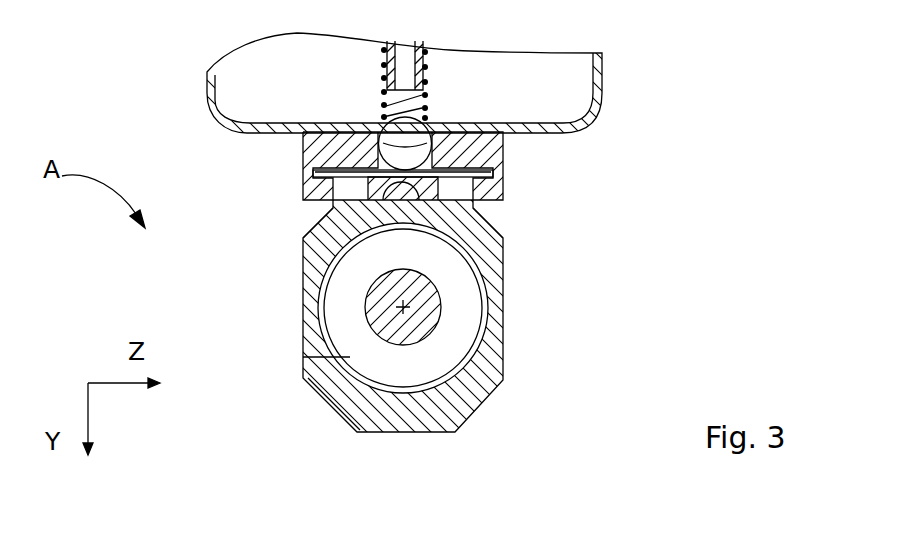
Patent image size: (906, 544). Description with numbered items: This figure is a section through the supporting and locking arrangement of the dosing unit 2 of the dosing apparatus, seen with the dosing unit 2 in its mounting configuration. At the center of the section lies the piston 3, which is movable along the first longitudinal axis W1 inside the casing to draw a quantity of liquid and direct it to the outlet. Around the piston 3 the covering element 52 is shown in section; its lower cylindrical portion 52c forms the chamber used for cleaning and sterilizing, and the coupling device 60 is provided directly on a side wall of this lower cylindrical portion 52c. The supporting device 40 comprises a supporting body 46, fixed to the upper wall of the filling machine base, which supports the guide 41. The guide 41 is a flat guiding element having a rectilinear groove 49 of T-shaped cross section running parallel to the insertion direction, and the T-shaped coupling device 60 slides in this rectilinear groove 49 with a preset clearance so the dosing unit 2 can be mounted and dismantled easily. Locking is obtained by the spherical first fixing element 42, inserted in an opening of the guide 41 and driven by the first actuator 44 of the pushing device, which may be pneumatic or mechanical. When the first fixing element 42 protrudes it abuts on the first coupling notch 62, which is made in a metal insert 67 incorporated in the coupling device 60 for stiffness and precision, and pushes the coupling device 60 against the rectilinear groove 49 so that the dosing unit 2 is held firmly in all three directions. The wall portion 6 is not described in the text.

The dosing unit 2 is at (510, 432).
The piston 3 is at (397, 333).
The wall of housing 6 is at (303, 357).
The supporting device 40 is at (553, 155).
The guide 41 is at (317, 152).
The first fixing element 42 is at (412, 129).
The first actuator 44 is at (378, 82).
The supporting body 46 is at (214, 80).
The rectilinear groove 49 is at (338, 207).
The covering element 52 is at (503, 340).
The lower cylindrical portion 52c is at (484, 219).
The coupling device 60 is at (465, 196).
The first coupling notch 62 is at (342, 248).
The insert 67 is at (418, 207).
The first longitudinal axis W1 is at (400, 309).